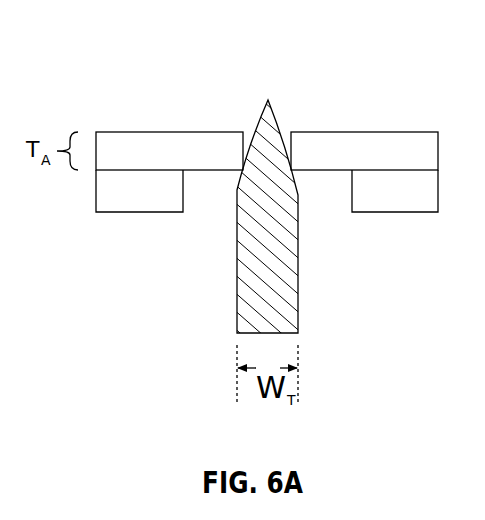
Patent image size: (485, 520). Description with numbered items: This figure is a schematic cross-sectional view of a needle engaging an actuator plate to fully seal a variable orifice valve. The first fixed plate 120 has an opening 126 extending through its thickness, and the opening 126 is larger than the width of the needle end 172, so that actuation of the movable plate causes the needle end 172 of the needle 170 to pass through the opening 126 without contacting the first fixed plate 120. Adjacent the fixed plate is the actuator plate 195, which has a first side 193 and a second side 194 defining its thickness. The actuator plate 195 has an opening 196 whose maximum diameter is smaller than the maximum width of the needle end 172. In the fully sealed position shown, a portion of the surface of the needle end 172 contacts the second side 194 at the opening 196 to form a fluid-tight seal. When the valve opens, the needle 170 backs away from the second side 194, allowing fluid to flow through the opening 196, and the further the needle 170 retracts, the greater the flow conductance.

The first fixed plate 120 is at (107, 186).
The opening 126 is at (199, 194).
The needle 170 is at (292, 307).
The needle end 172 is at (299, 105).
The first side 193 is at (381, 128).
The second side 194 is at (339, 178).
The actuator plate 195 is at (404, 140).
The opening 196 is at (301, 186).